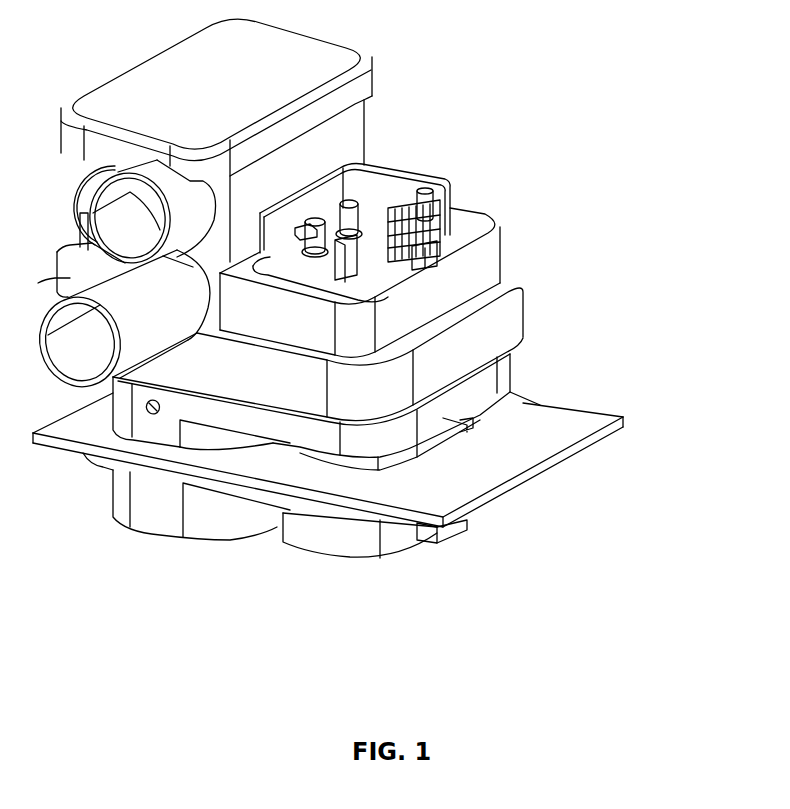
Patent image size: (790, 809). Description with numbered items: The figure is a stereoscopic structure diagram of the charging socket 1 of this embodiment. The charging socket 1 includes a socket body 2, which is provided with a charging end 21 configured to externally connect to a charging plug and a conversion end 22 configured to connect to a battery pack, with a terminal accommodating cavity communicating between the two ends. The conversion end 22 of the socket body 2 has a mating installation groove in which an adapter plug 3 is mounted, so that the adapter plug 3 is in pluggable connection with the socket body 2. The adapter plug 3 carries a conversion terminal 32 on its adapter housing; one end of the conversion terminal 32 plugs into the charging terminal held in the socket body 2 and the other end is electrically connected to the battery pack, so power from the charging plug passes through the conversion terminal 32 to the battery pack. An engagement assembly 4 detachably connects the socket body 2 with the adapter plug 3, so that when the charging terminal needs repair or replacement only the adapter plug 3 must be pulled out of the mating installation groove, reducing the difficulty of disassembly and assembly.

The charging socket 1 is at (424, 80).
The socket body 2 is at (487, 347).
The adapter plug 3 is at (405, 186).
The engagement assembly 4 is at (340, 231).
The charging end 21 is at (357, 546).
The conversion end 22 is at (470, 215).
The conversion terminal 32 is at (517, 278).